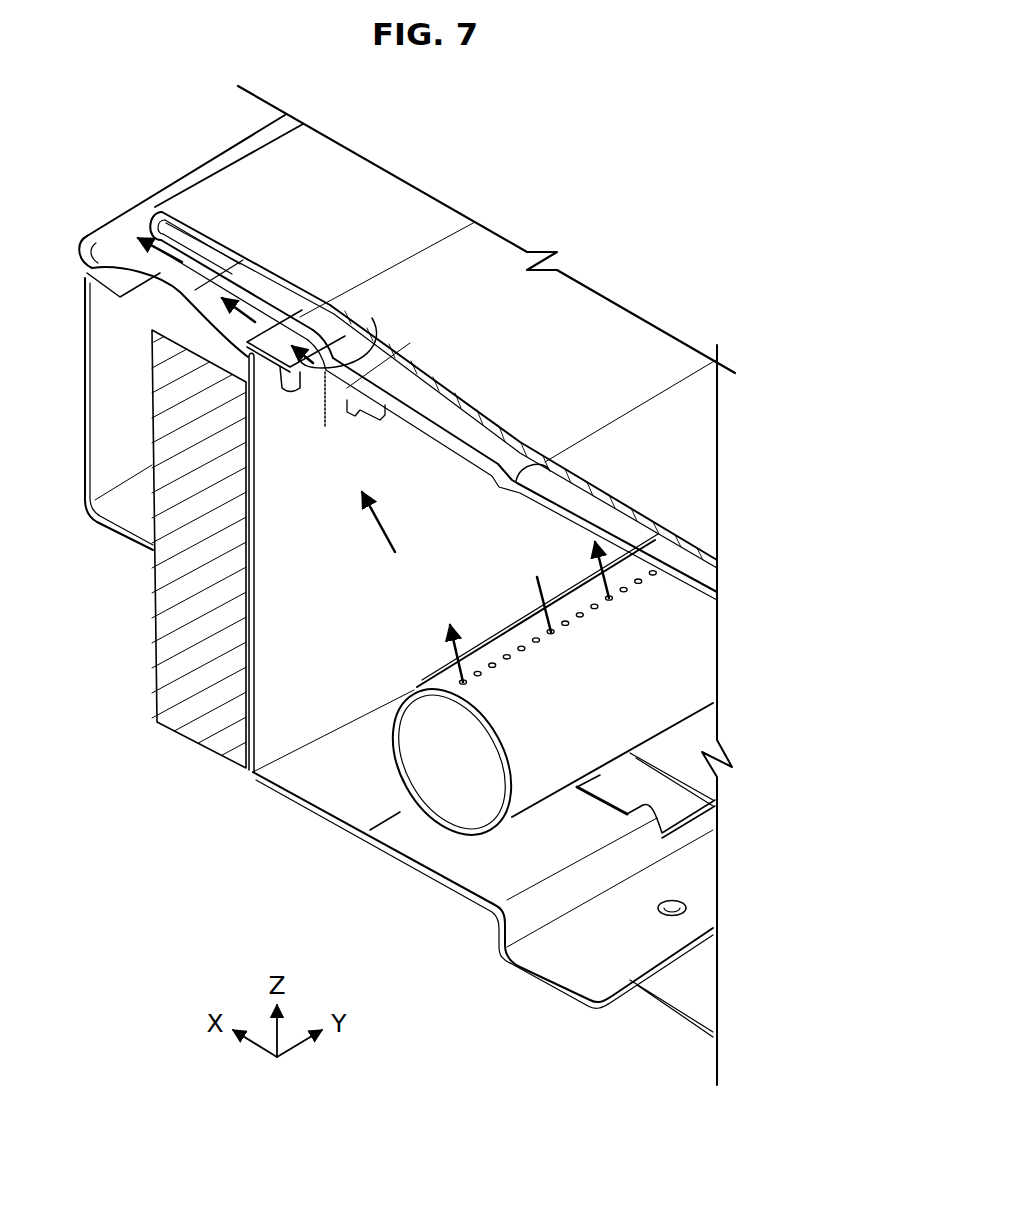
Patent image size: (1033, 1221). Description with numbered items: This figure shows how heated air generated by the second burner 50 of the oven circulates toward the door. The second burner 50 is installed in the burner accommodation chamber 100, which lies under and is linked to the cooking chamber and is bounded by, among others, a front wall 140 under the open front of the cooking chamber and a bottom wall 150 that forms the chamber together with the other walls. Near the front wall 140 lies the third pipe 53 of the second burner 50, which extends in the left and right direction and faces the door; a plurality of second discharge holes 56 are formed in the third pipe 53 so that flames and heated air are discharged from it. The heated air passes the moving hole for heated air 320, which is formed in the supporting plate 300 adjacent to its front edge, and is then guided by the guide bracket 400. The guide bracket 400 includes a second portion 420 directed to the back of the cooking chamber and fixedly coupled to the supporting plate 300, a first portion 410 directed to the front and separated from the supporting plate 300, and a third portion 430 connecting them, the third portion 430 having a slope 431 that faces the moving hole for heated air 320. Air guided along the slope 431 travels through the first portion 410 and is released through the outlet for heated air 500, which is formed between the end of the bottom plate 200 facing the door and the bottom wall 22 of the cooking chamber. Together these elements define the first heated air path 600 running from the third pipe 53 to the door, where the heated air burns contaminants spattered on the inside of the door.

The bottom plate 200 is at (343, 176).
The bottom wall 22 is at (120, 215).
The outlet for heated air 500 is at (120, 225).
The supporting plate 300 is at (268, 338).
The first portion 410 is at (276, 288).
The guide bracket 400 is at (344, 330).
The third portion 430 is at (320, 322).
The slope 431 is at (384, 316).
The second portion 420 is at (455, 412).
The burner accommodation chamber 100 is at (473, 536).
The moving hole for heated air 320 is at (324, 390).
The front wall 140 is at (291, 635).
The bottom wall 150 is at (337, 787).
The second burner 50 is at (611, 895).
The third pipe 53 is at (655, 618).
The first heated air path 600 is at (442, 652).
The second discharge holes 56 is at (502, 660).